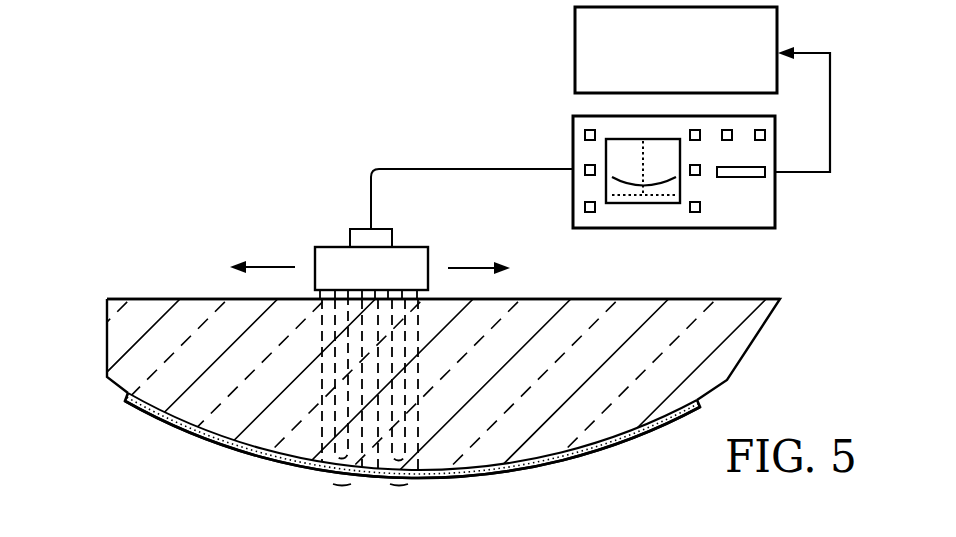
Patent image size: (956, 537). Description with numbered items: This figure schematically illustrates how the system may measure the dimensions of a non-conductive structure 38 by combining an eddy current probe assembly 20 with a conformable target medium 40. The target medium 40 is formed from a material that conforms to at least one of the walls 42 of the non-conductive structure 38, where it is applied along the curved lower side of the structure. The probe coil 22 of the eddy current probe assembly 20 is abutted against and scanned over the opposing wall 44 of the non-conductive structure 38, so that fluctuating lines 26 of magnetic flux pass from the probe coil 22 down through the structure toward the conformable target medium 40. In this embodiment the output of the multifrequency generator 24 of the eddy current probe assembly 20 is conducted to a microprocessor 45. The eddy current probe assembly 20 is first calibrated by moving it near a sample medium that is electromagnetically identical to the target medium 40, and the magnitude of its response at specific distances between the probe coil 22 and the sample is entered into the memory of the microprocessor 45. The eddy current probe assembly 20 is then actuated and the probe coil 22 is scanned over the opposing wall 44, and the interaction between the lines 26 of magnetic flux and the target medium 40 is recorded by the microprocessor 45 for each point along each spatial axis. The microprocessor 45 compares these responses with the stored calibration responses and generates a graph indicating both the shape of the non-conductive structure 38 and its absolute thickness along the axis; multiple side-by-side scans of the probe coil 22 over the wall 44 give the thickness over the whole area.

The eddy current probe assembly 20 is at (657, 156).
The probe coil 22 is at (400, 268).
The multifrequency generator 24 is at (645, 217).
The lines of magnetic flux 26 is at (421, 433).
The non-conductive structure 38 is at (92, 340).
The target medium 40 is at (155, 440).
The wall 42 is at (215, 452).
The opposing wall 44 is at (200, 297).
The microprocessor 45 is at (575, 53).